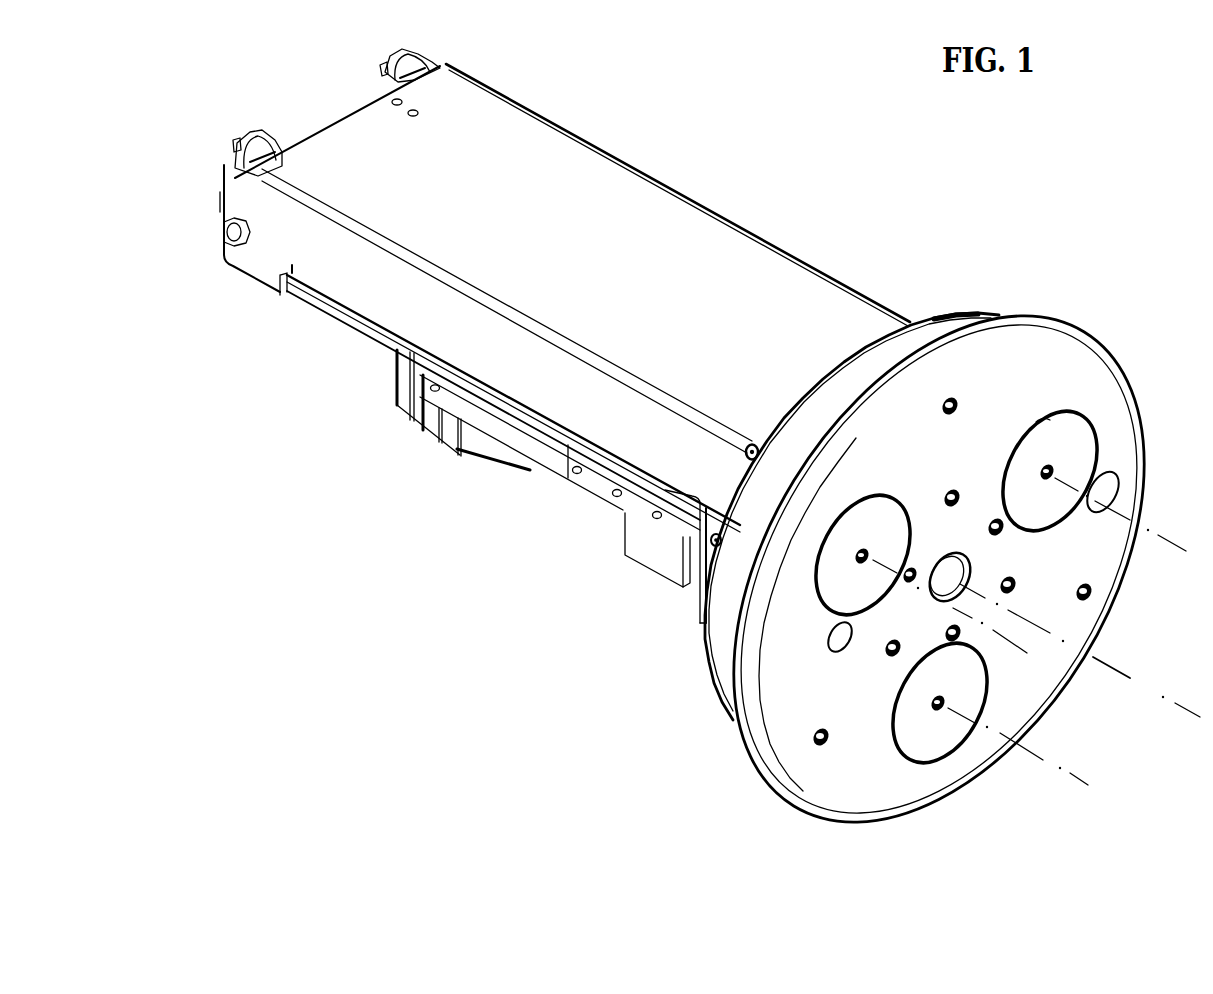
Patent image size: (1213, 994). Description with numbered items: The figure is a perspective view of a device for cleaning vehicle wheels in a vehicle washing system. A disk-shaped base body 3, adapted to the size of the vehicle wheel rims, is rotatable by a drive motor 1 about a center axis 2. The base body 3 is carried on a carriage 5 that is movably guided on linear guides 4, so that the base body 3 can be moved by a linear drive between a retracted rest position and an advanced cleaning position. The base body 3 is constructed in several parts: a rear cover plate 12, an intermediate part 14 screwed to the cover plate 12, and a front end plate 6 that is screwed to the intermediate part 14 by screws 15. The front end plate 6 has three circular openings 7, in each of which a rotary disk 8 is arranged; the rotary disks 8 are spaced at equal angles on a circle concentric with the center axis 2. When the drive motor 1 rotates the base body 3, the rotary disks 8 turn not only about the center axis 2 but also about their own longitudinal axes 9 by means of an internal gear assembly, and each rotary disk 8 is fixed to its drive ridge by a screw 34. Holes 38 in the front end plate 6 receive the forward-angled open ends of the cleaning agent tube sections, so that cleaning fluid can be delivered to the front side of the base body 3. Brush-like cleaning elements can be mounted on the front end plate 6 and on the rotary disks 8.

The drive motor 1 is at (550, 470).
The center axis 2 is at (1130, 678).
The base body 3 is at (1047, 298).
The linear guides 4 is at (312, 290).
The carriage 5 is at (617, 207).
The front end plate 6 is at (1090, 375).
The circular openings 7 is at (1043, 425).
The rotary disks 8 is at (1015, 452).
The longitudinal axes 9 is at (1175, 542).
The rear cover plate 12 is at (832, 372).
The intermediate part 14 is at (925, 333).
The screws 15 is at (808, 737).
The screws 34 is at (977, 619).
The holes 38 is at (1093, 510).